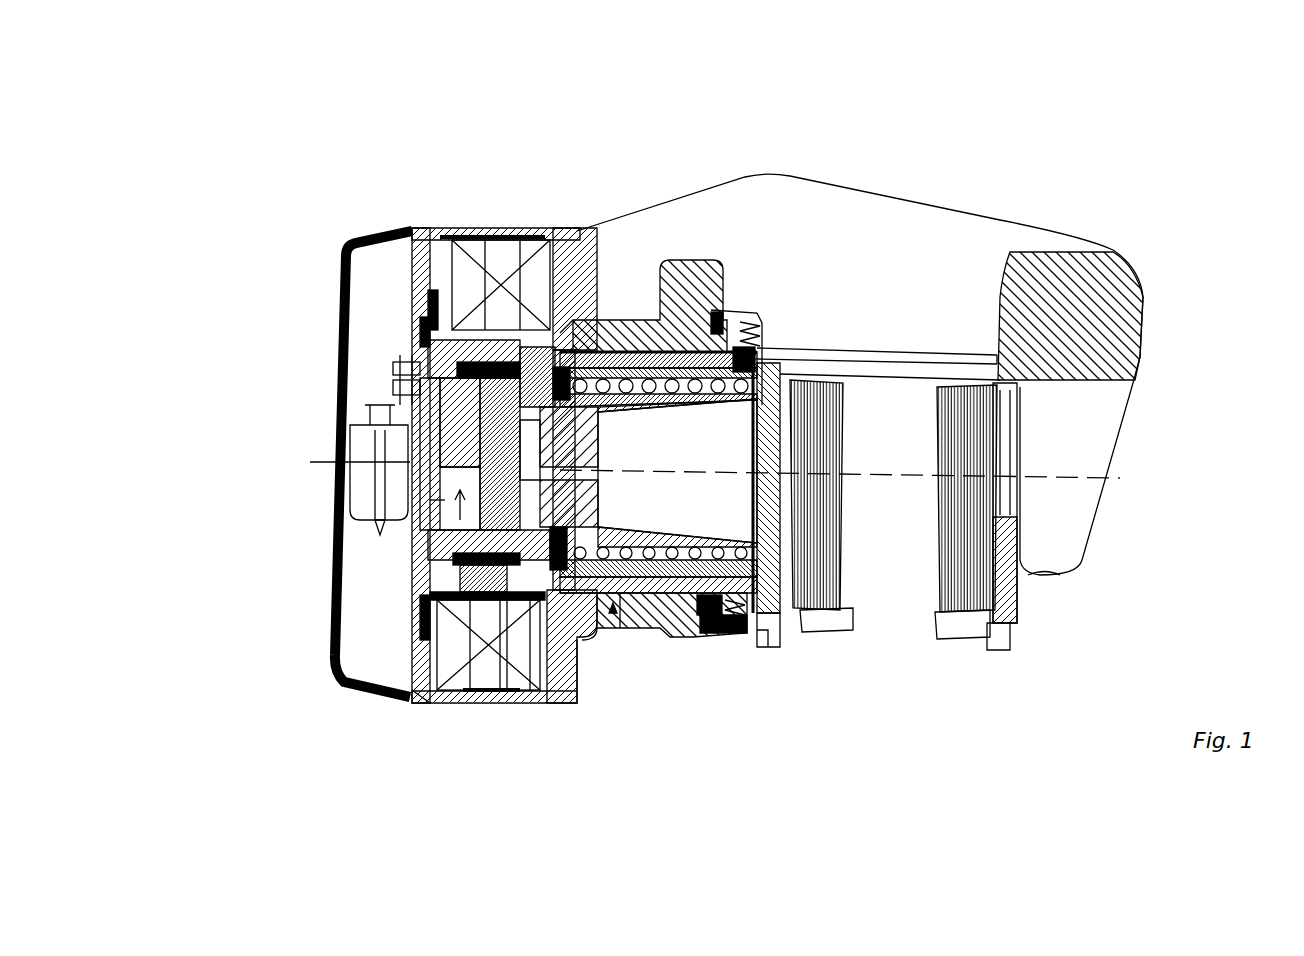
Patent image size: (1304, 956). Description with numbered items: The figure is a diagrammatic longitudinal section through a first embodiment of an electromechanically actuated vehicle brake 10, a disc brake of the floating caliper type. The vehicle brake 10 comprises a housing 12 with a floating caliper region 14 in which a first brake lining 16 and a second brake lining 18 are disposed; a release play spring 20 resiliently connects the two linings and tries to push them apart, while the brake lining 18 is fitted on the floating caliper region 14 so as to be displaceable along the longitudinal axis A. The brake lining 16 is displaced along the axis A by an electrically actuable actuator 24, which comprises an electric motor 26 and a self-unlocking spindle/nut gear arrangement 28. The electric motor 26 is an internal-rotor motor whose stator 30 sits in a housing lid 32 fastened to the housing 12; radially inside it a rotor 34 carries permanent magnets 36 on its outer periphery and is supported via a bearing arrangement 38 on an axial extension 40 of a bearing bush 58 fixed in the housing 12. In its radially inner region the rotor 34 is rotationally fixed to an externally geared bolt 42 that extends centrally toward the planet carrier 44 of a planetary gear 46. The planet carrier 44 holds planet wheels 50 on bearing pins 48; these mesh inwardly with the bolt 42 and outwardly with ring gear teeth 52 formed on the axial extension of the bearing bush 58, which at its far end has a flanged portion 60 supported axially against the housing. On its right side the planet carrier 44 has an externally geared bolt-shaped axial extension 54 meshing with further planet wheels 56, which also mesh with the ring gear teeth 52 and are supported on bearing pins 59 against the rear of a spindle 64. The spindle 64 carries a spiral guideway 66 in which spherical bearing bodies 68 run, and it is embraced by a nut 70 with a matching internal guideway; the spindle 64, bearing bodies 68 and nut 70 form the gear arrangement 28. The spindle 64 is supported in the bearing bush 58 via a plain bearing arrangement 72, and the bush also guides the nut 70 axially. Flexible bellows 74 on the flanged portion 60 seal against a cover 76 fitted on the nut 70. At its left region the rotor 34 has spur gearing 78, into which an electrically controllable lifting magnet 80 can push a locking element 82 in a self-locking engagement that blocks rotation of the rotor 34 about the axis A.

The vehicle brake 10 is at (1183, 198).
The housing 12 is at (1128, 306).
The floating caliper region 14 is at (875, 213).
The first brake lining 16 is at (820, 598).
The second brake lining 18 is at (985, 455).
The release play spring 20 is at (998, 355).
The electrically actuable actuator 24 is at (613, 612).
The electric motor 26 is at (410, 230).
The self-unlocking spindle/nut gear arrangement 28 is at (618, 350).
The stator 30 is at (445, 240).
The housing lid 32 is at (443, 700).
The rotor 34 is at (333, 637).
The permanent magnets 36 is at (407, 333).
The bearing arrangement 38 is at (410, 374).
The axial extension 40 is at (430, 607).
The externally geared bolt 42 is at (420, 498).
The planet carrier 44 is at (500, 595).
The planetary gear 46 is at (400, 697).
The bearing pins 48 is at (507, 285).
The planet wheels 50 is at (486, 262).
The ring gear teeth 52 is at (435, 560).
The bolt-shaped axial extension 54 is at (553, 345).
The further planet wheels 56 is at (567, 640).
The bearing bush 58 is at (660, 633).
The bearing pins 59 is at (528, 600).
The flanged portion 60 is at (725, 633).
The spindle 64 is at (680, 630).
The guideway 66 is at (683, 330).
The spherical bearing bodies 68 is at (632, 628).
The nut 70 is at (750, 320).
The plain bearing arrangement 72 is at (597, 345).
The flexible bellows 74 is at (765, 640).
The cover 76 is at (777, 367).
The spur gearing 78 is at (410, 437).
The lifting magnet 80 is at (410, 488).
The locking element 82 is at (383, 390).
The longitudinal axis A is at (1120, 478).